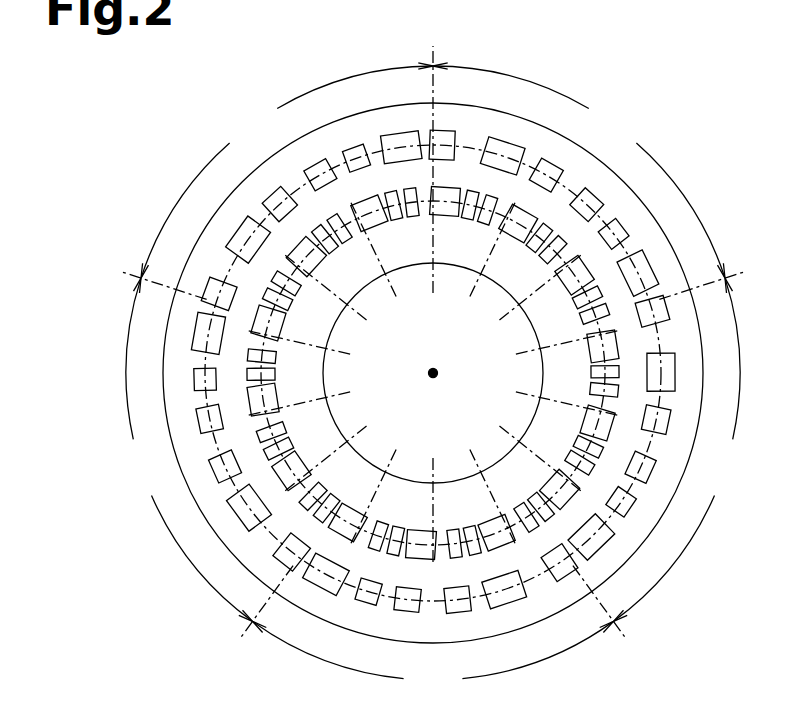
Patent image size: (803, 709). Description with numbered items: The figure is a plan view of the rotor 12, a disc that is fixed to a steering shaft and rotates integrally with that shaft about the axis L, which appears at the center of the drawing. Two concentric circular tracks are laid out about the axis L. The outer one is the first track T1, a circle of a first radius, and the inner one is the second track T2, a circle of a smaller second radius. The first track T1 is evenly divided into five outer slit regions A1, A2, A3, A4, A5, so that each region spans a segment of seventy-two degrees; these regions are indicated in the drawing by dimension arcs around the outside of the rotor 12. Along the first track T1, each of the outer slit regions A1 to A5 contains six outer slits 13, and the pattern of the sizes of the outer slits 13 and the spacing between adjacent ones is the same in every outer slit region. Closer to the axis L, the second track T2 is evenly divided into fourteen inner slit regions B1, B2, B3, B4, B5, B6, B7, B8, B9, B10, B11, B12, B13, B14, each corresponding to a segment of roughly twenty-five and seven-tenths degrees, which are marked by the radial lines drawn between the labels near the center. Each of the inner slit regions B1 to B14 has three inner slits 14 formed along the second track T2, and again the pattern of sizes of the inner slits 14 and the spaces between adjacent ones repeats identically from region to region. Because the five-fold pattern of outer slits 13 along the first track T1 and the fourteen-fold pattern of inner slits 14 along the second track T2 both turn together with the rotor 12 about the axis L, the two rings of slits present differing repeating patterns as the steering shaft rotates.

The rotor 12 is at (698, 319).
The outer slits 13 is at (548, 162).
The inner slits 14 is at (445, 216).
The first track T1 is at (631, 243).
The second track T2 is at (566, 283).
The axis L is at (433, 373).
The outer slit region A1 is at (588, 181).
The outer slit region A2 is at (657, 457).
The outer slit region A3 is at (427, 626).
The outer slit region A4 is at (187, 446).
The outer slit region A5 is at (287, 170).
The inner slit region B1 is at (447, 169).
The inner slit region B2 is at (493, 257).
The inner slit region B3 is at (538, 300).
The inner slit region B4 is at (559, 356).
The inner slit region B5 is at (557, 404).
The inner slit region B6 is at (529, 458).
The inner slit region B7 is at (478, 496).
The inner slit region B8 is at (418, 505).
The inner slit region B9 is at (374, 487).
The inner slit region B10 is at (330, 444).
The inner slit region B11 is at (309, 389).
The inner slit region B12 is at (311, 340).
The inner slit region B13 is at (338, 287).
The inner slit region B14 is at (390, 249).